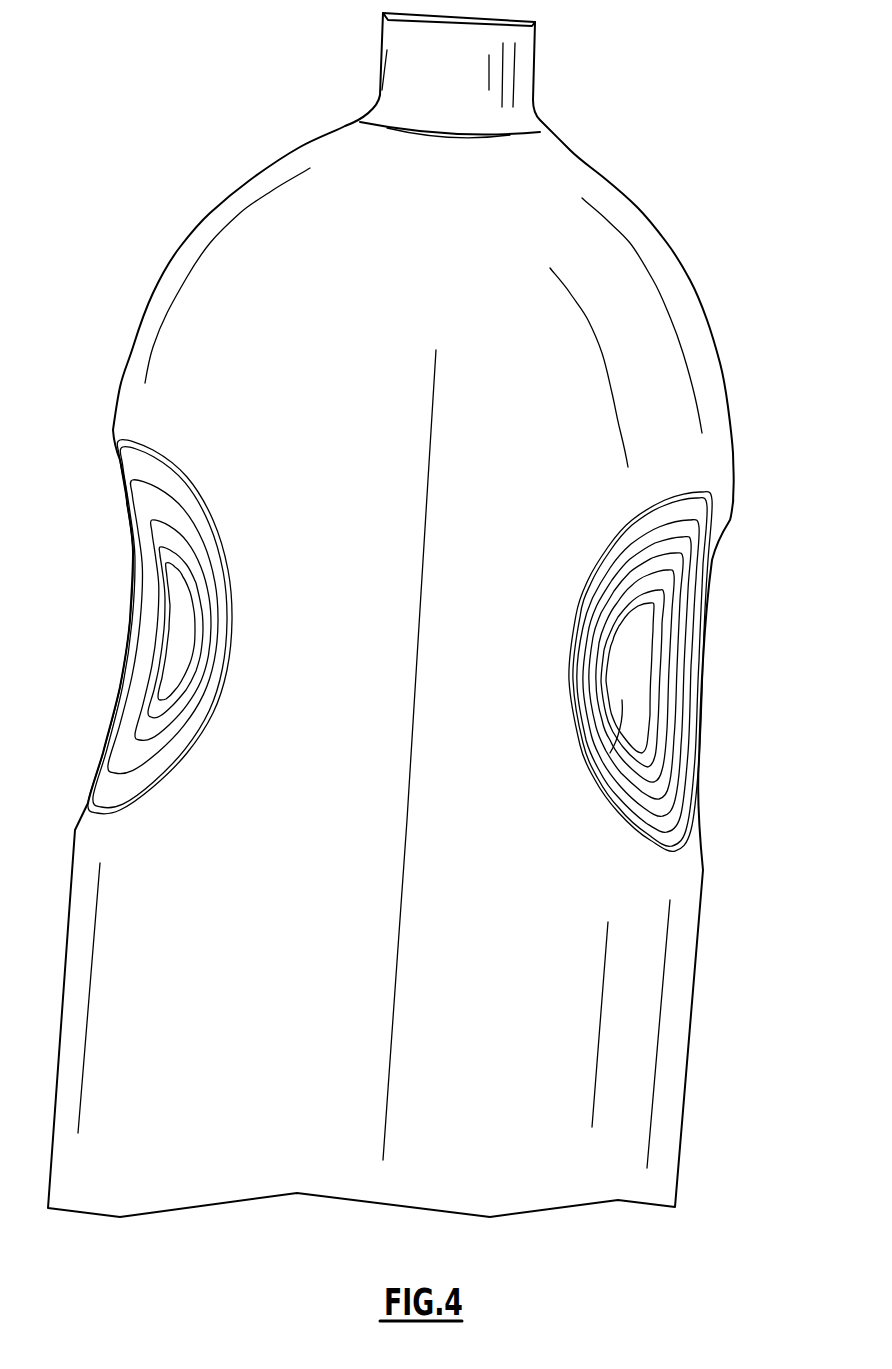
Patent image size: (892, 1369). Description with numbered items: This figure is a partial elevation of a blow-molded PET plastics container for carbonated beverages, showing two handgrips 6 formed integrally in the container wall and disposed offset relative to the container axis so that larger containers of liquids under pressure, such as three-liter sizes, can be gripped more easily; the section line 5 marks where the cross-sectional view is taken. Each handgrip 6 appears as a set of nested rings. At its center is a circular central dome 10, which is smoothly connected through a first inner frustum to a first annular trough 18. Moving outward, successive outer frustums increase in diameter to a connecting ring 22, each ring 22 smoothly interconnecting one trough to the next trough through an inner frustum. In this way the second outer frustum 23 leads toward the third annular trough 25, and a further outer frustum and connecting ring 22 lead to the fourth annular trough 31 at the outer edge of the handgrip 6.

The section line 5- 5 is at (69, 573).
The handgrip 6 is at (118, 661).
The circular central dome 10 is at (622, 700).
The first annular trough 18 is at (650, 650).
The connecting ring 22 is at (677, 598).
The second outer frustum 23 is at (677, 763).
The third annular trough 25 is at (677, 793).
The fourth annular trough 31 is at (690, 820).